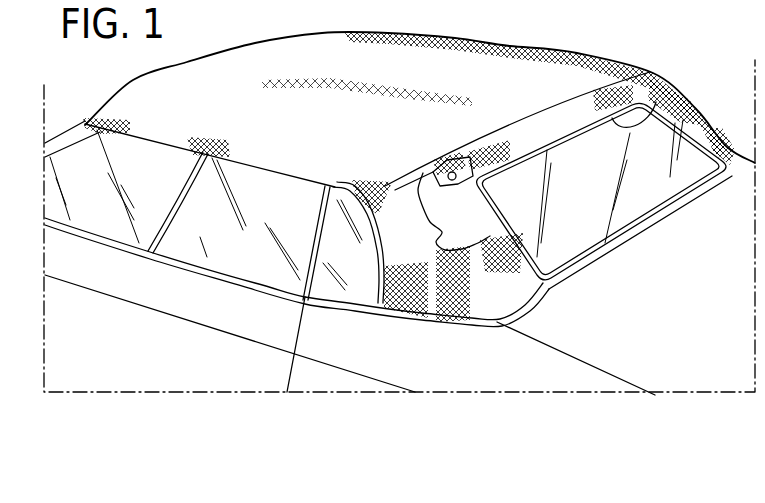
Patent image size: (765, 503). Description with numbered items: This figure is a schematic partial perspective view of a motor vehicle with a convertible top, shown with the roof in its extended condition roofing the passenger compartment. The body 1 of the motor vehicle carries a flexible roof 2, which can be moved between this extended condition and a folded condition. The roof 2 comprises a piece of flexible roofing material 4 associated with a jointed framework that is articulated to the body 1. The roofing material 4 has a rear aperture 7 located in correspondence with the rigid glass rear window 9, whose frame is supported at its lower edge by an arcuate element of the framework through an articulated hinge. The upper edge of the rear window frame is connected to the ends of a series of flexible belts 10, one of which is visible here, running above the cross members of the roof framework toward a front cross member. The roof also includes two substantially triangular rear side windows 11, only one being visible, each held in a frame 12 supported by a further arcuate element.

The body 1 is at (185, 353).
The flexible roof 2 is at (549, 46).
The flexible roofing material 4 is at (147, 93).
The rear aperture 7 is at (663, 110).
The rigid glass rear window 9 is at (633, 197).
The flexible belt 10 is at (437, 160).
The rear side window 11 is at (343, 258).
The frame of rear side window 12 is at (382, 267).